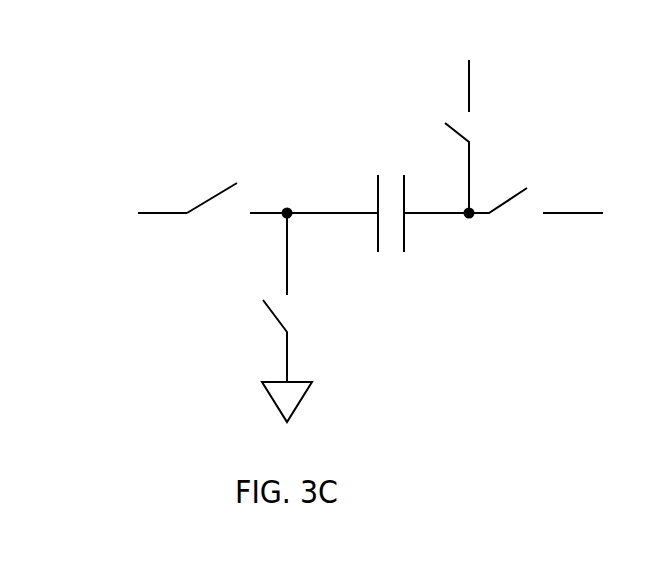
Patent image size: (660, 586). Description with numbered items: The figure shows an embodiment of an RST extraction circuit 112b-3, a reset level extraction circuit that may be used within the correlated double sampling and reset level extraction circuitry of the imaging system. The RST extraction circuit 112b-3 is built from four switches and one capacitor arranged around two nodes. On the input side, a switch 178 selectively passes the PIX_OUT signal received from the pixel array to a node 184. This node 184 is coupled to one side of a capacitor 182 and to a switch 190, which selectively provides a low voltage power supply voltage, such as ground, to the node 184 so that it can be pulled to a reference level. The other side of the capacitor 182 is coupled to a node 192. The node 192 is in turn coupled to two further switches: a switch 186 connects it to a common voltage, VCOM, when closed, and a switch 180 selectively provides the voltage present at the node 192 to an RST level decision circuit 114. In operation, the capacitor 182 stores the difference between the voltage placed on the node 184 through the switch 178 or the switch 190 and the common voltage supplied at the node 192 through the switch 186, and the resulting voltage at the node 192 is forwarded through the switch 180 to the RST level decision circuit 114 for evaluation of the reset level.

The RST extraction circuit 112b-3 is at (211, 102).
The switch 178 is at (237, 218).
The node 184 is at (289, 216).
The switch 190 is at (302, 341).
The capacitor 182 is at (378, 199).
The node 192 is at (468, 218).
The switch 186 is at (485, 164).
The switch 180 is at (504, 217).
The RST level decision circuit 114 is at (599, 219).